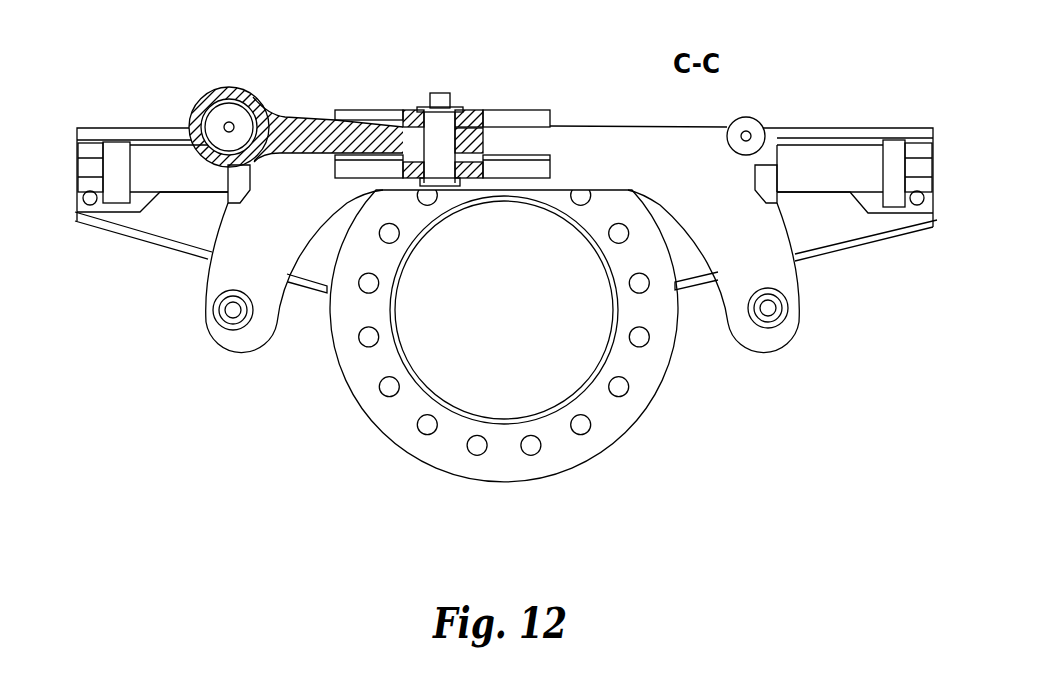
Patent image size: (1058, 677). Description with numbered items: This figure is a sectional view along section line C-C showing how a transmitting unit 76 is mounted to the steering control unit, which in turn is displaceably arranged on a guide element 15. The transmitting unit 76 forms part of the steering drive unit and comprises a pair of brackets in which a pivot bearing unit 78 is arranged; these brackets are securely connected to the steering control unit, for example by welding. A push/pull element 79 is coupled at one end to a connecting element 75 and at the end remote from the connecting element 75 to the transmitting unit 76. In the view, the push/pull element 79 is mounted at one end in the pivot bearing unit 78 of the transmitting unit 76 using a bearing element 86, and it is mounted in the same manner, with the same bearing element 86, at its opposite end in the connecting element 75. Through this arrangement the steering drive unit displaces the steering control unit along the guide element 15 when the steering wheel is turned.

The connecting element 75 is at (224, 121).
The push/pull element 79 is at (295, 130).
The bearing element 86 is at (420, 127).
The pivot bearing unit 78 is at (438, 168).
The transmitting unit 76 is at (525, 120).
The guide element 15 is at (822, 160).